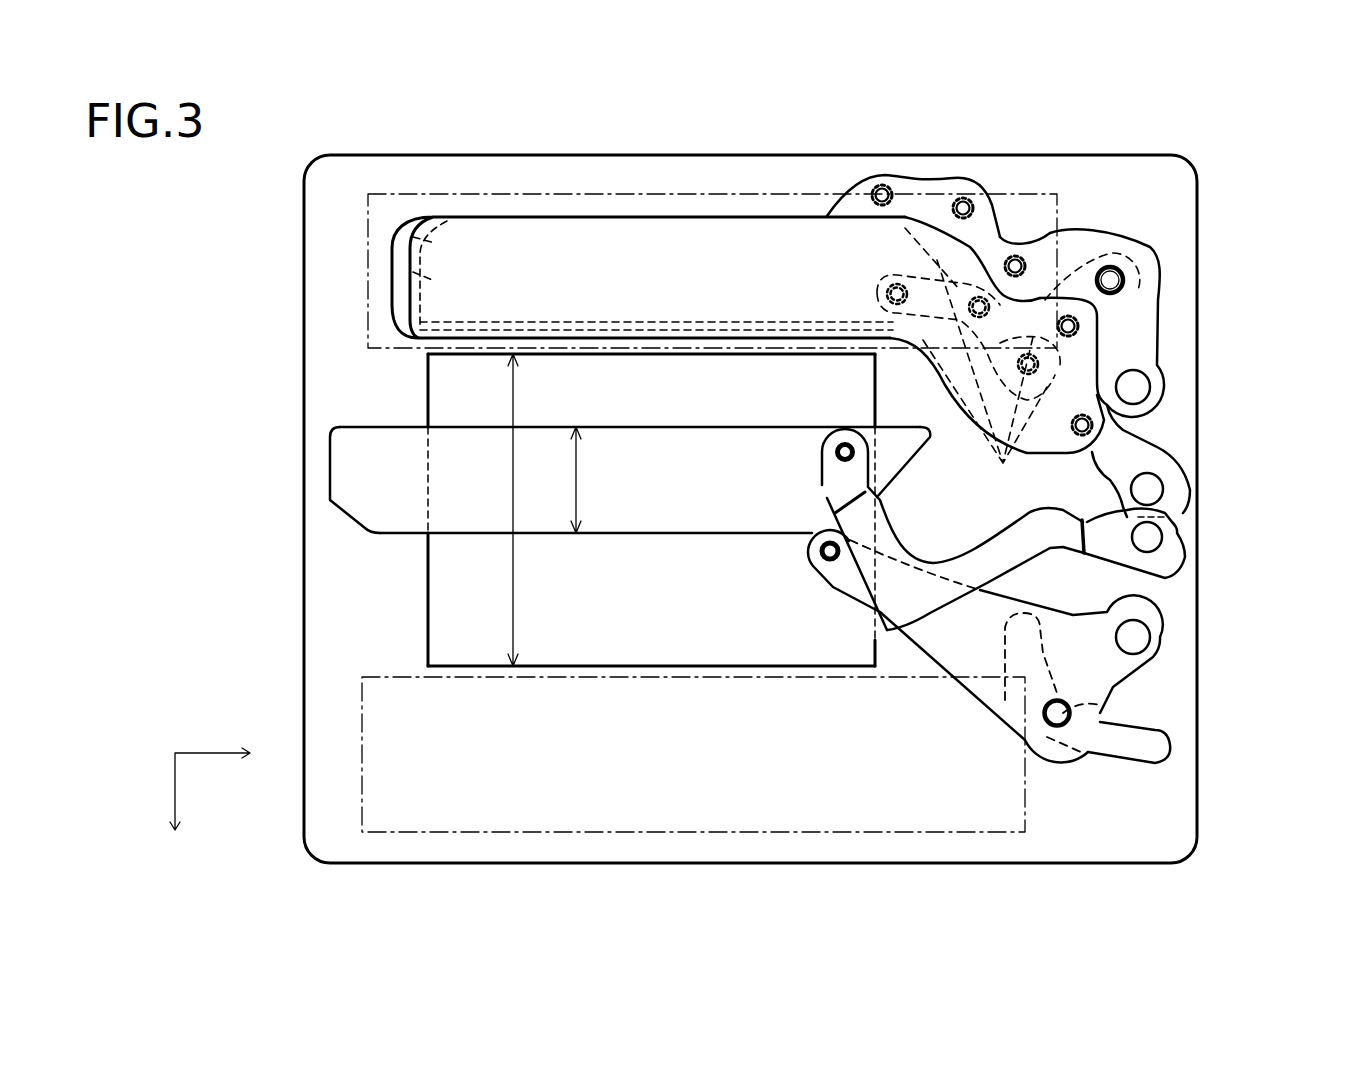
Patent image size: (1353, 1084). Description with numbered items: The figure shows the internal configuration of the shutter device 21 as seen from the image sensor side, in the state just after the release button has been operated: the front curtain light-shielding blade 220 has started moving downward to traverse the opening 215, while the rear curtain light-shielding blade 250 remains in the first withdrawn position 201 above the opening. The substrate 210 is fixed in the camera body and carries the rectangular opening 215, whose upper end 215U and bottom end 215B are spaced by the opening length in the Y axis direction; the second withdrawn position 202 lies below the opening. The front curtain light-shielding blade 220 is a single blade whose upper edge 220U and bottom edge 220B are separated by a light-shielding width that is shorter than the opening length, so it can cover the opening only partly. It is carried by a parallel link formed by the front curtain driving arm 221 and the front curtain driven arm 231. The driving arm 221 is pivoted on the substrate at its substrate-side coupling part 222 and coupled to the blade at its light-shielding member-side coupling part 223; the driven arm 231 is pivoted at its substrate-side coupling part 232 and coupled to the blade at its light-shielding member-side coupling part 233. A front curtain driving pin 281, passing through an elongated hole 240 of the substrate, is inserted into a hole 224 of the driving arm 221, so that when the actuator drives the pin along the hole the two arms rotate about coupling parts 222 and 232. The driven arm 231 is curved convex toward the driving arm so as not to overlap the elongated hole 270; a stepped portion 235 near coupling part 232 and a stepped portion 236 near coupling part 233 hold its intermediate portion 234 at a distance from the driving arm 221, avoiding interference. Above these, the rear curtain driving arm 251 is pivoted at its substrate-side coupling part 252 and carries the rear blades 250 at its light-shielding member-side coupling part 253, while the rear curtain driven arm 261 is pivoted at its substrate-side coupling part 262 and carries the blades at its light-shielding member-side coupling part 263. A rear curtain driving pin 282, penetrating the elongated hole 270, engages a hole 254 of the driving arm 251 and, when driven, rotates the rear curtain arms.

The shutter device 21 is at (649, 140).
The first withdrawn position 201 is at (452, 194).
The second withdrawn position 202 is at (645, 832).
The substrate 210 is at (415, 852).
The opening 215 is at (455, 590).
The upper end 215U is at (448, 355).
The bottom end 215B is at (472, 667).
The front curtain light-shielding blade 220 is at (375, 500).
The upper edge 220U is at (648, 425).
The bottom edge 220B is at (650, 533).
The front curtain driving arm 221 is at (1018, 727).
The substrate-side coupling part 222 is at (1150, 637).
The light-shielding member-side coupling part 223 is at (820, 566).
The hole 224 is at (1057, 693).
The front curtain driven arm 231 is at (1160, 563).
The substrate-side coupling part 232 is at (1165, 537).
The light-shielding member-side coupling part 233 is at (838, 440).
The intermediate portion 234 is at (913, 600).
The stepped portion 235 is at (1087, 542).
The stepped portion 236 is at (845, 505).
The elongated hole 240 is at (1108, 760).
The rear curtain light-shielding blade 250 is at (433, 281).
The rear curtain driving arm 251 is at (1122, 318).
The substrate-side coupling part 252 is at (1143, 375).
The light-shielding member-side coupling part 253 is at (1066, 318).
The hole 254 is at (1124, 276).
The rear curtain driven arm 261 is at (1157, 459).
The substrate-side coupling part 262 is at (1163, 493).
The light-shielding member-side coupling part 263 is at (1010, 455).
The elongated hole 270 is at (1088, 262).
The front curtain driving pin 281 is at (1070, 713).
The rear curtain driving pin 282 is at (1112, 280).